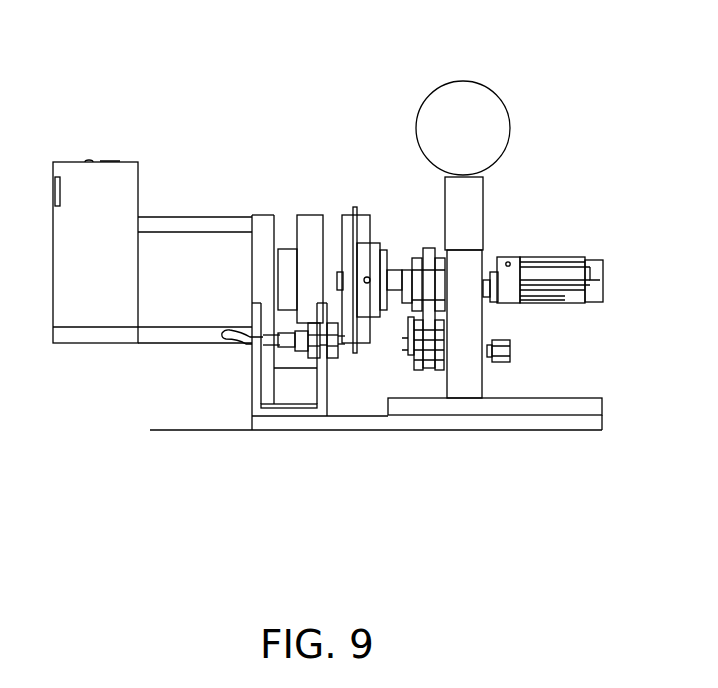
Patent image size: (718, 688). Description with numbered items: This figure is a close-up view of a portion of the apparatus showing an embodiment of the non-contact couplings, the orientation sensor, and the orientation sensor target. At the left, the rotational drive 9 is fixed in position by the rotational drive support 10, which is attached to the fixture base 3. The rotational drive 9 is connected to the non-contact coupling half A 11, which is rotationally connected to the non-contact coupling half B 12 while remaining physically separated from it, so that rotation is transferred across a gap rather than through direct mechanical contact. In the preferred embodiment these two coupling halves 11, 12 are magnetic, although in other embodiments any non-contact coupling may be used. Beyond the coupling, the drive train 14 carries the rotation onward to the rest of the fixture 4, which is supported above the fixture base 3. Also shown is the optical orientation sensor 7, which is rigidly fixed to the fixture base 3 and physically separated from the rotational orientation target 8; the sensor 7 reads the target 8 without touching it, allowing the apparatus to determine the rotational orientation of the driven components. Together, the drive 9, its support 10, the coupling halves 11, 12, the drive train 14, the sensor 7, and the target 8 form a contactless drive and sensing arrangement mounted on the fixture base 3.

The fixture base 3 is at (509, 431).
The fixture 4 is at (560, 398).
The orientation sensor 7 is at (343, 348).
The orientation target 8 is at (352, 203).
The rotational drive 9 is at (200, 215).
The rotational drive support 10 is at (263, 215).
The non-contact coupling half A 11 is at (312, 213).
The non-contact coupling half B 12 is at (368, 212).
The drive train 14 is at (474, 247).